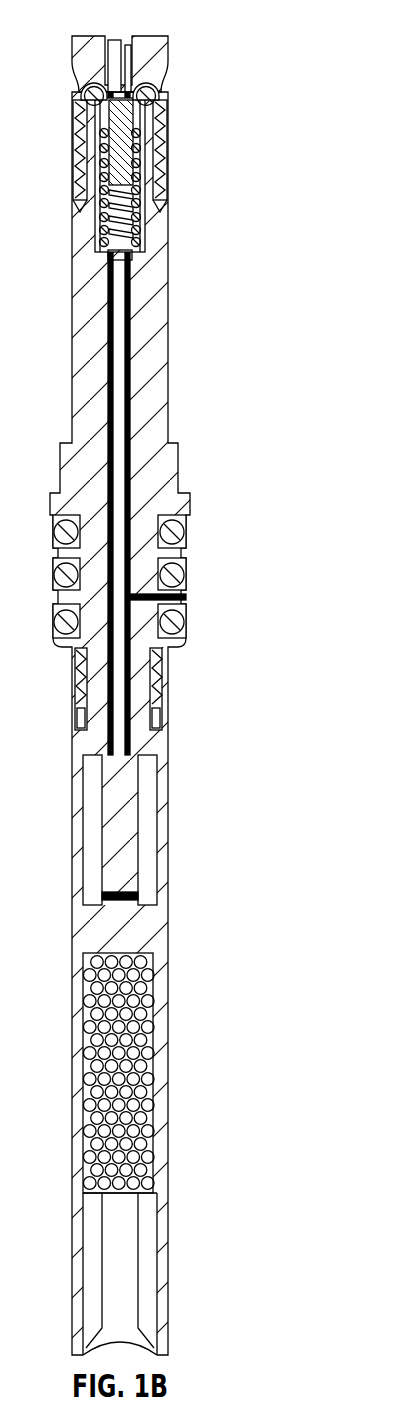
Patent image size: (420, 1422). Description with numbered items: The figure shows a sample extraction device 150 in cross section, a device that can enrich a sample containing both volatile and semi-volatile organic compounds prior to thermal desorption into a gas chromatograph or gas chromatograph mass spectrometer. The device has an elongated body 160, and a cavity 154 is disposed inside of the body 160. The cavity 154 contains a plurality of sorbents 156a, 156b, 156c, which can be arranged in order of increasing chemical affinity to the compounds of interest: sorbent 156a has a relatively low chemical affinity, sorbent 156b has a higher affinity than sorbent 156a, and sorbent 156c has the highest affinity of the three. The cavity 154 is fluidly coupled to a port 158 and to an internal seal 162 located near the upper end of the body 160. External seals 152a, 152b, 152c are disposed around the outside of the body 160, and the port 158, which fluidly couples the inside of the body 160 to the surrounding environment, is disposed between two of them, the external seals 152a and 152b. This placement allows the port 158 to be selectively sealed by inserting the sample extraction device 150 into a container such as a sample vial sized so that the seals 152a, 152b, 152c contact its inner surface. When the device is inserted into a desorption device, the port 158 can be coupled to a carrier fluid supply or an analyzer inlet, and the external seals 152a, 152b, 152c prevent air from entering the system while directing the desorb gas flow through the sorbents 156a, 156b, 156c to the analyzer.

The sample extraction device 150 is at (168, 150).
The external seal 152a is at (178, 628).
The external seal 152b is at (180, 572).
The external seal 152c is at (180, 528).
The cavity 154 is at (148, 1313).
The sorbent 156a is at (152, 1152).
The sorbent 156b is at (152, 1082).
The sorbent 156c is at (152, 990).
The port 158 is at (185, 597).
The body 160 is at (157, 315).
The internal seal 162 is at (163, 96).